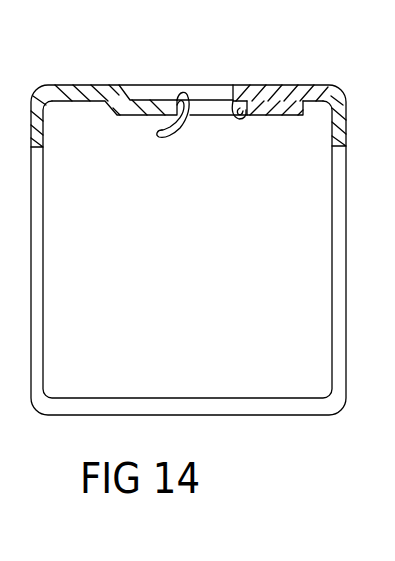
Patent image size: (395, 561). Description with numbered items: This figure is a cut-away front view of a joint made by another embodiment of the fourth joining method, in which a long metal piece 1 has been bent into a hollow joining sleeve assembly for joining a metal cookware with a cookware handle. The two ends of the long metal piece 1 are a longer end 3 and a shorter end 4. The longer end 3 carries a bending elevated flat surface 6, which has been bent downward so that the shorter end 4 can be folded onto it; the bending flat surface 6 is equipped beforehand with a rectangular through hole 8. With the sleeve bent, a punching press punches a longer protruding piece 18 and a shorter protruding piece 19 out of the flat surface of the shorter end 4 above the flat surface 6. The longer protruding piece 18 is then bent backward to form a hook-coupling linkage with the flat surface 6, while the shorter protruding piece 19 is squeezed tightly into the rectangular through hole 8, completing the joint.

The long metal piece 1 is at (197, 406).
The longer end 3 is at (79, 86).
The shorter end 4 is at (263, 88).
The bending elevated flat surface 6 is at (282, 113).
The rectangular through hole 8 is at (207, 106).
The longer protruding piece 18 is at (172, 133).
The shorter protruding piece 19 is at (241, 120).